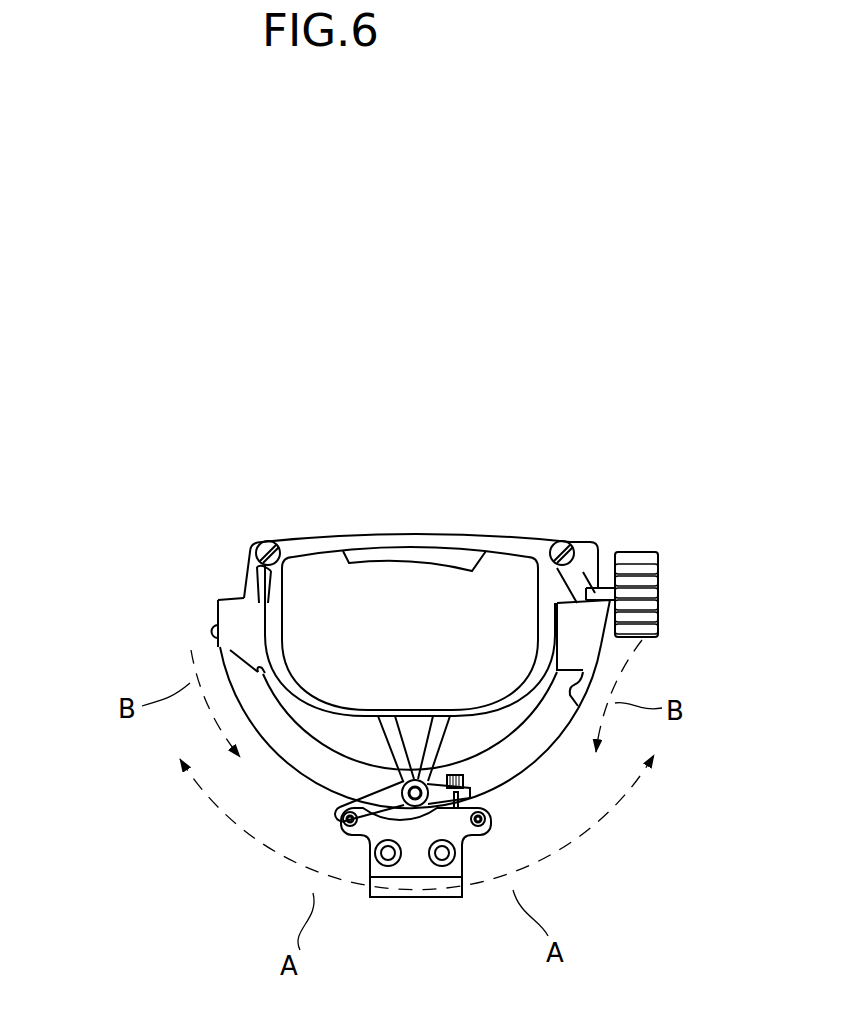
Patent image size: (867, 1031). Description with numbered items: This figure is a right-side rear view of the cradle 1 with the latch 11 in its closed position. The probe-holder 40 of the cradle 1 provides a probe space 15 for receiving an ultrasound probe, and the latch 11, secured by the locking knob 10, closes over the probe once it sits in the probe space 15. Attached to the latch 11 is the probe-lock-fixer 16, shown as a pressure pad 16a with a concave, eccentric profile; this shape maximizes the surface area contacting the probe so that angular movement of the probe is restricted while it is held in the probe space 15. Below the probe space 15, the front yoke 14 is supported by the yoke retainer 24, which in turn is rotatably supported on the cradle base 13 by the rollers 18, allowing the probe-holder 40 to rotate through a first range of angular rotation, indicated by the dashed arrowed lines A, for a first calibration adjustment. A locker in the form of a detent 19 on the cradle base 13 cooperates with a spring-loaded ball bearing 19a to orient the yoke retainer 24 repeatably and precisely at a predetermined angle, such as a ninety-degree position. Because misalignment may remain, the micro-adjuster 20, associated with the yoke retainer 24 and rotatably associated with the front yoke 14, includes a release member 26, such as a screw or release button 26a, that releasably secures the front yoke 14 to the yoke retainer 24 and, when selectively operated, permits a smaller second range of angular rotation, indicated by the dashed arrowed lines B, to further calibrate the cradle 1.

The cradle 1 is at (206, 428).
The locking knob 10 is at (637, 583).
The latch 11 is at (362, 546).
The cradle base 13 is at (430, 885).
The front yoke 14 is at (543, 709).
The probe space 15 is at (491, 594).
The probe-lock-fixer 16 is at (460, 543).
The pressure pad 16a is at (401, 552).
The rollers 18 is at (350, 822).
The locker (detent) 19 is at (414, 826).
The spring-loaded ball bearing 19a is at (440, 796).
The micro-adjuster 20 is at (232, 620).
The yoke retainer 24 is at (238, 684).
The release member 26 is at (208, 638).
The release button 26a is at (209, 629).
The probe-holder 40 is at (240, 767).